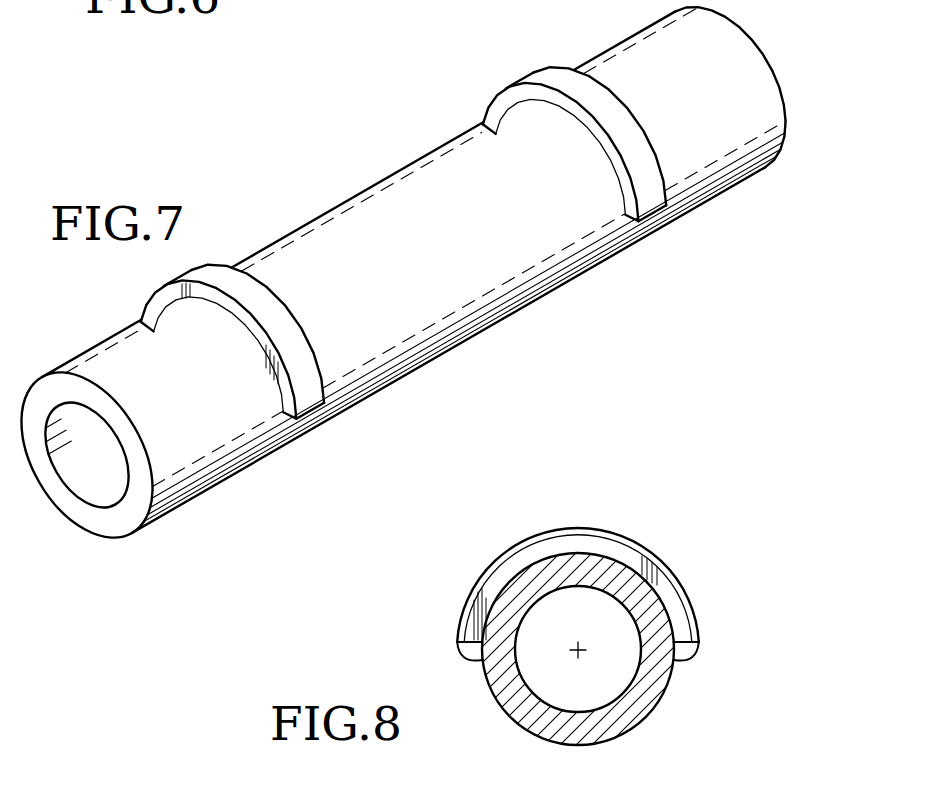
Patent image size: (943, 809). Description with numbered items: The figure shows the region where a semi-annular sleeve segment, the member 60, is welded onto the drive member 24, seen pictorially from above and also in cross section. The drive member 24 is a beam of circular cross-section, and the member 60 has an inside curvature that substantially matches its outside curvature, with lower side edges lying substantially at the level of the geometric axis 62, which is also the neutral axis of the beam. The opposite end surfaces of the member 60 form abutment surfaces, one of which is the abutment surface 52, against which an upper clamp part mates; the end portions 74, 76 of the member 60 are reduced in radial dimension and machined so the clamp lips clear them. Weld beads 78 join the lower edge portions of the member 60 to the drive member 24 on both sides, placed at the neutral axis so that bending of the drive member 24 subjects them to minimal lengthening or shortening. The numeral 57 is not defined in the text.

In FIG. 7, the drive member 24 is at (233, 445).
In FIG. 8, the drive member 24 is at (617, 717).
In FIG. 7, the abutment surface 52 is at (250, 368).
In FIG. 8, the abutment surface 52 is at (580, 604).
In FIG. 7, the second clamp half-shell 57 is at (606, 154).
In FIG. 7, the member 60 is at (466, 225).
In FIG. 8, the member 60 is at (580, 592).
In FIG. 8, the geometric axis 62 is at (573, 655).
In FIG. 7, the end portion 74 is at (310, 393).
In FIG. 7, the end portion 76 is at (653, 178).
In FIG. 8, the weld beads 78 is at (465, 656).